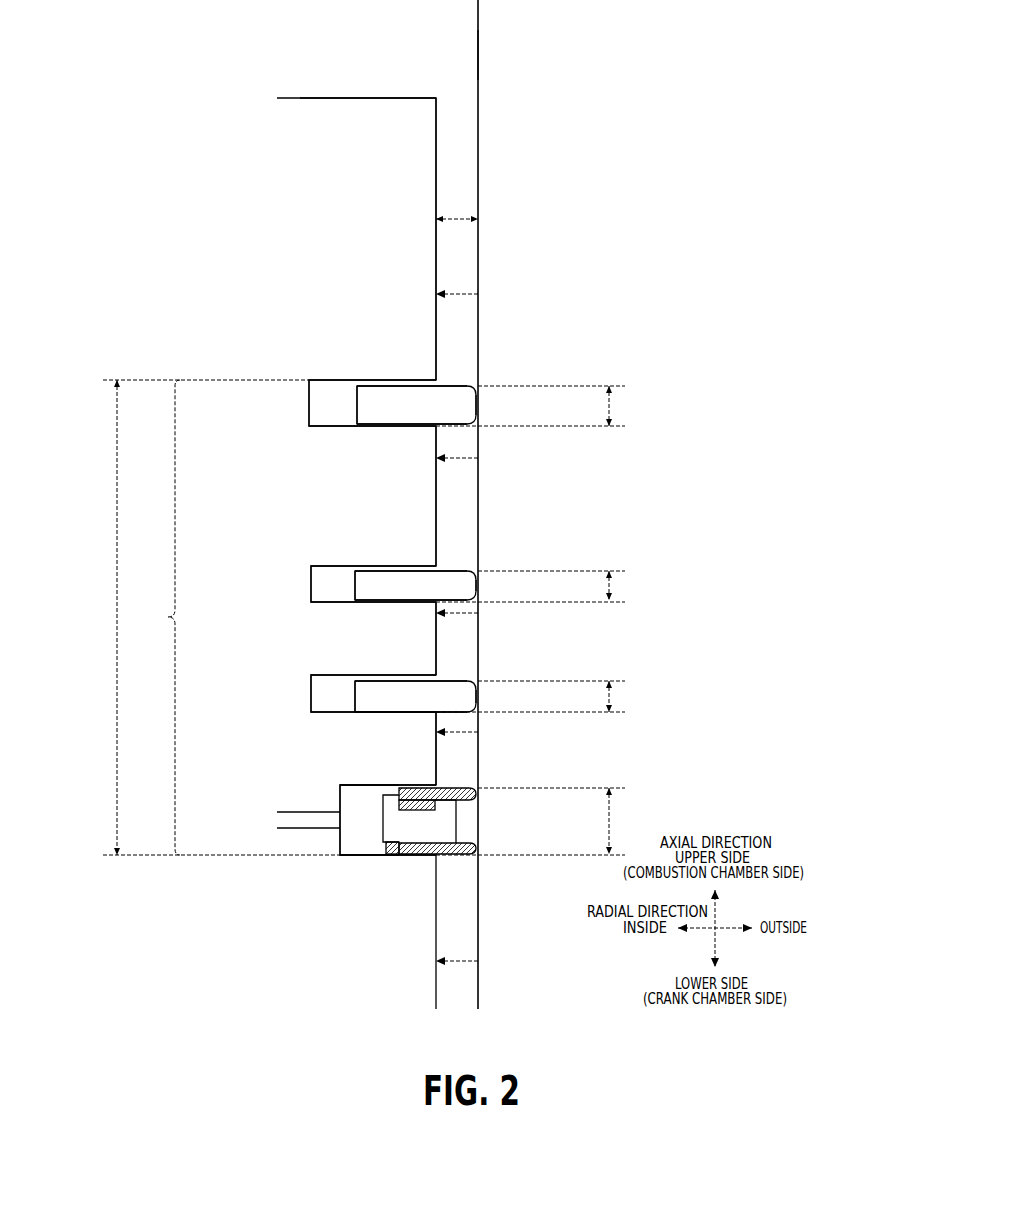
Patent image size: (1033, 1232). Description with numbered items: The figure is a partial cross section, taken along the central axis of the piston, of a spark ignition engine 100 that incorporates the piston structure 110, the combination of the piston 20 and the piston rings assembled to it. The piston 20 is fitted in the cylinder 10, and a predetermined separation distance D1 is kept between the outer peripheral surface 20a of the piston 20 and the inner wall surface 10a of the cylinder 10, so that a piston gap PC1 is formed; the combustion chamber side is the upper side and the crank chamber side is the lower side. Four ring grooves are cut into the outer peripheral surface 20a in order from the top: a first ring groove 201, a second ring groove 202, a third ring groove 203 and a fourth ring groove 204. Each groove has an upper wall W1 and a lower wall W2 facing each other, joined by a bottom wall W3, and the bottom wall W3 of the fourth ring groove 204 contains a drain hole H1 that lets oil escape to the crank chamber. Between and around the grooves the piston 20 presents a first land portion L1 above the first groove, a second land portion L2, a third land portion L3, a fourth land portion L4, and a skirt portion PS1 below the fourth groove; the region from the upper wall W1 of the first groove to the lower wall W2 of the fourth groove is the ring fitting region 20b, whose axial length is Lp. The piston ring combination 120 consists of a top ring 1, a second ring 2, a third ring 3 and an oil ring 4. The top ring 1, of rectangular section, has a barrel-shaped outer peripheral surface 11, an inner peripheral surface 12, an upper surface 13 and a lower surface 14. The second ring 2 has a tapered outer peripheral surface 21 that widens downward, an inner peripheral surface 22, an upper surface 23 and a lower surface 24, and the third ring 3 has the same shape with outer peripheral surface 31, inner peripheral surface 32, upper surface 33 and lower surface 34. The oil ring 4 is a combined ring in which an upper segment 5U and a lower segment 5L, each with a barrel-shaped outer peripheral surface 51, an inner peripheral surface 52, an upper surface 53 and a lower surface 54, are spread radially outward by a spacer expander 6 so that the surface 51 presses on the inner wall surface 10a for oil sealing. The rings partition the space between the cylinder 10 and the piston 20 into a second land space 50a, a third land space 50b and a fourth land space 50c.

The spark ignition engine 100 is at (264, 55).
The piston structure 110 is at (371, 95).
The outer peripheral surface of the piston 20a is at (438, 114).
The inner wall surface of the cylinder 10a is at (478, 58).
The piston gap PC1 is at (470, 187).
The separation distance D1 is at (457, 207).
The piston 20 is at (360, 257).
The cylinder 10 is at (508, 257).
The first land portion L1 is at (478, 296).
The top ring 1 is at (455, 381).
The piston ring combination 120 is at (452, 364).
The outer peripheral surface of the top ring 11 is at (478, 403).
The inner peripheral surface of the top ring 12 is at (357, 400).
The upper surface of the top ring 13 is at (397, 380).
The lower surface of the top ring 14 is at (394, 426).
The first ring groove 201 is at (305, 424).
The second land portion L2 is at (478, 459).
The second land space 50a is at (470, 507).
The second ring 2 is at (456, 569).
The outer peripheral surface of the second ring 21 is at (478, 583).
The inner peripheral surface of the second ring 22 is at (356, 578).
The upper surface of the second ring 23 is at (405, 566).
The lower surface of the second ring 24 is at (402, 603).
The second ring groove 202 is at (308, 566).
The third land portion L3 is at (478, 614).
The third land space 50b is at (470, 652).
The third ring 3 is at (456, 679).
The outer peripheral surface of the third ring 31 is at (478, 693).
The inner peripheral surface of the third ring 32 is at (357, 706).
The upper surface of the third ring 33 is at (405, 677).
The lower surface of the third ring 34 is at (402, 714).
The third ring groove 203 is at (308, 675).
The fourth land portion L4 is at (478, 732).
The fourth land space 50c is at (470, 761).
The fourth ring groove 204 is at (338, 784).
The oil ring 4 is at (471, 823).
The upper segment 5U is at (490, 797).
The lower segment 5L is at (456, 857).
The outer peripheral surface of the segment 51 is at (478, 798).
The inner peripheral surface of the segment 52 is at (388, 785).
The upper surface of the segment 53 is at (424, 788).
The lower surface of the segment 54 is at (432, 806).
The spacer expander 6 is at (380, 838).
The drain hole H1 is at (257, 789).
The skirt portion PS1 is at (478, 961).
The axial length of the ring fitting region Lp is at (216, 617).
The ring fitting region 20b is at (156, 617).
The upper wall W1 is at (345, 380).
The lower wall W2 is at (345, 426).
The bottom wall W3 is at (309, 410).